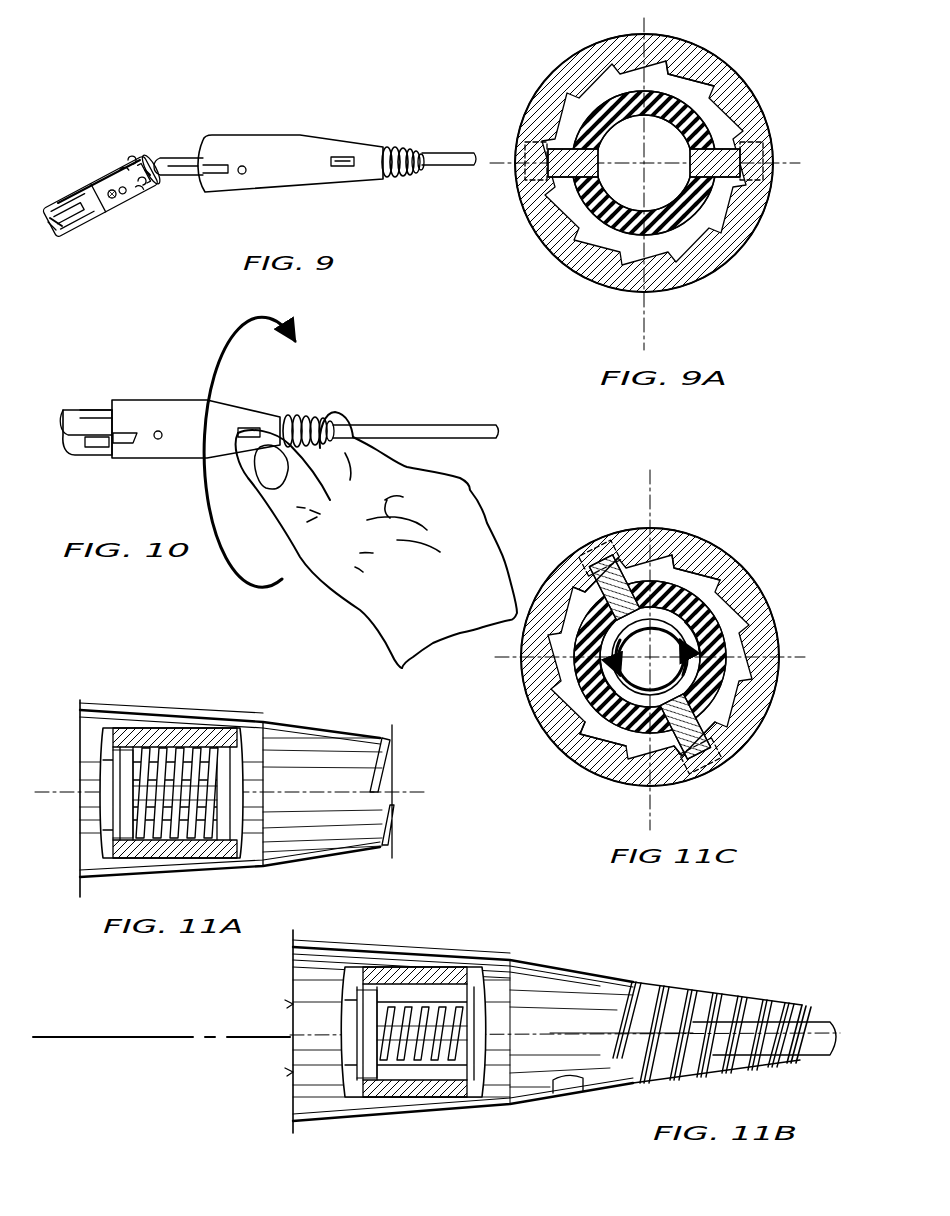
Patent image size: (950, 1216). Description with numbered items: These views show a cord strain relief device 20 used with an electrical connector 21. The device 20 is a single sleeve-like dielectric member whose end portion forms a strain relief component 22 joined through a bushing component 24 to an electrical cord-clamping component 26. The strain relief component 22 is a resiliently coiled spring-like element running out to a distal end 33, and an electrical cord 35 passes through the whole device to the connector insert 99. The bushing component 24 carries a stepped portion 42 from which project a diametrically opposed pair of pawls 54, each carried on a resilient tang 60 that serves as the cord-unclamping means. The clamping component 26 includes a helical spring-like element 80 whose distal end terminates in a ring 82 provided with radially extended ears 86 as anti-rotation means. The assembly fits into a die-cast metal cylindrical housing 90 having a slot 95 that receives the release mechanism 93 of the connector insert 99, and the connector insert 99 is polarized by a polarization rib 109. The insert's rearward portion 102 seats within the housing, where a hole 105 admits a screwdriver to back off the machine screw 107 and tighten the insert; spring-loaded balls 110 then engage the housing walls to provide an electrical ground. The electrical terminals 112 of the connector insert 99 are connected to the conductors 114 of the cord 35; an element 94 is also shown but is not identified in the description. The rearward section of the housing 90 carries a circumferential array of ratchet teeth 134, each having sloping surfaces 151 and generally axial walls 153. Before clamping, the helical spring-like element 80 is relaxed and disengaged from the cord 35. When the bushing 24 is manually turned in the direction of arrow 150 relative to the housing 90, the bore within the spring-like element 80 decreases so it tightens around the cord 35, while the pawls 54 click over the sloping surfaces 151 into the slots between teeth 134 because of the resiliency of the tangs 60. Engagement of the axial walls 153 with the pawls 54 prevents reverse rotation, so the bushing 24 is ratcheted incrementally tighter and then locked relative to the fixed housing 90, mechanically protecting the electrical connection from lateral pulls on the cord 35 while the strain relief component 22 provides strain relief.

In FIG. 11A, the cord strain relief device 20 is at (115, 672).
In FIG. 11B, the cord strain relief device 20 is at (335, 1160).
In FIG. 9, the electrical connector 21 is at (216, 111).
In FIG. 10, the electrical connector 21 is at (136, 375).
In FIG. 11B, the electrical connector 21 is at (640, 936).
In FIG. 9, the strain relief component 22 is at (397, 186).
In FIG. 10, the strain relief component 22 is at (305, 410).
In FIG. 11B, the strain relief component 22 is at (737, 985).
In FIG. 9, the bushing component 24 is at (350, 187).
In FIG. 10, the bushing component 24 is at (244, 414).
In FIG. 11C, the bushing component 24 is at (674, 556).
In FIG. 11A, the bushing component 24 is at (331, 723).
In FIG. 11B, the bushing component 24 is at (571, 968).
In FIG. 11A, the electrical cord-clamping component 26 is at (108, 706).
In FIG. 11B, the electrical cord-clamping component 26 is at (311, 944).
In FIG. 9, the distal end of strain relief component 33 is at (424, 150).
In FIG. 10, the distal end of strain relief component 33 is at (338, 418).
In FIG. 11B, the distal end of strain relief component 33 is at (808, 1012).
In FIG. 9, the electrical cord 35 is at (437, 166).
In FIG. 10, the electrical cord 35 is at (466, 423).
In FIG. 11A, the electrical cord 35 is at (215, 802).
In FIG. 11B, the electrical cord 35 is at (812, 1055).
In FIG. 9A, the stepped portion 42 is at (674, 93).
In FIG. 11C, the stepped portion 42 is at (722, 625).
In FIG. 9A, the pawls 54 is at (557, 135).
In FIG. 11C, the pawls 54 is at (585, 562).
In FIG. 9, the resilient tangs 60 is at (343, 152).
In FIG. 9A, the resilient tangs 60 is at (757, 138).
In FIG. 10, the resilient tangs 60 is at (241, 441).
In FIG. 11C, the resilient tangs 60 is at (625, 538).
In FIG. 11B, the resilient tangs 60 is at (567, 1106).
In FIG. 11A, the helical spring-like element 80 is at (152, 742).
In FIG. 11B, the helical spring-like element 80 is at (421, 1003).
In FIG. 11A, the ring 82 is at (108, 823).
In FIG. 11B, the ring 82 is at (345, 1090).
In FIG. 11A, the ears 86 is at (102, 780).
In FIG. 11B, the ears 86 is at (363, 1022).
In FIG. 9A, the cylindrical housing 90 is at (749, 82).
In FIG. 11C, the cylindrical housing 90 is at (752, 603).
In FIG. 10, the release mechanism 93 is at (98, 446).
In FIG. 9, the lower jaw 94 is at (48, 230).
In FIG. 9, the slot 95 is at (209, 182).
In FIG. 10, the slot 95 is at (131, 443).
In FIG. 9, the connector insert 99 is at (85, 172).
In FIG. 9, the rearward portion of connector insert 102 is at (113, 166).
In FIG. 9, the hole 105 is at (262, 167).
In FIG. 10, the hole 105 is at (158, 431).
In FIG. 9, the machine screw 107 is at (137, 197).
In FIG. 10, the machine screw 107 is at (158, 440).
In FIG. 9, the polarization rib 109 is at (60, 195).
In FIG. 10, the polarization rib 109 is at (78, 410).
In FIG. 9, the spring-loaded balls 110 is at (58, 220).
In FIG. 9, the electrical terminals 112 is at (128, 163).
In FIG. 9, the conductors 114 is at (151, 177).
In FIG. 9A, the ratchet teeth 134 is at (670, 78).
In FIG. 11C, the ratchet teeth 134 is at (574, 560).
In FIG. 10, the arrow 150 is at (244, 344).
In FIG. 11C, the arrow 150 is at (651, 659).
In FIG. 11C, the sloping surfaces 151 is at (705, 576).
In FIG. 11C, the axial walls 153 is at (690, 556).